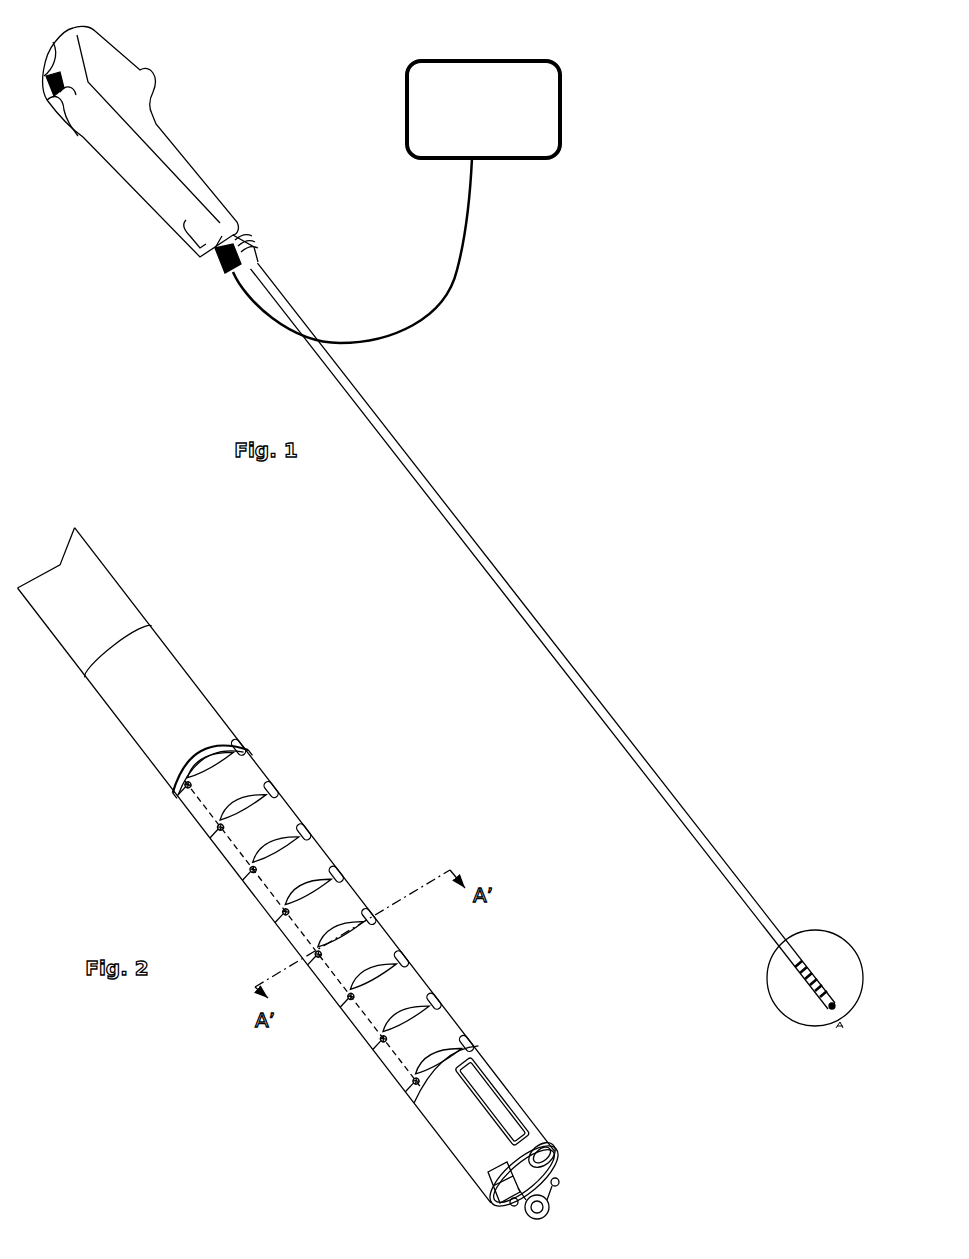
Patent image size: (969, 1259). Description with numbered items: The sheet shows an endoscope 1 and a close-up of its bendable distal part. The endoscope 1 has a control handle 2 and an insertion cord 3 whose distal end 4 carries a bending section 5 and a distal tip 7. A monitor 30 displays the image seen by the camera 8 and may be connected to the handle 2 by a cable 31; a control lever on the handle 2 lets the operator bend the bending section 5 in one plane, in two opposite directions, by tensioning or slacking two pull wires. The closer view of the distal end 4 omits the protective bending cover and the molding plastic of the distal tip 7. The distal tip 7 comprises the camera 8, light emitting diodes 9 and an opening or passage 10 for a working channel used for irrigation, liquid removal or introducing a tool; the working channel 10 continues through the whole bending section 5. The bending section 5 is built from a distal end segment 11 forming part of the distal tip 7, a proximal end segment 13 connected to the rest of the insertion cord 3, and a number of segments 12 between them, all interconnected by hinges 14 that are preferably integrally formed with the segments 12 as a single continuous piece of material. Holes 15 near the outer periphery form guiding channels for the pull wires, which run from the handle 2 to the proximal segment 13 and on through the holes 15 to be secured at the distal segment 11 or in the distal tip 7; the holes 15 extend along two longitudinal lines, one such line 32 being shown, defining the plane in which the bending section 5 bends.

In FIG. 1, the endoscope 1 is at (523, 381).
In FIG. 1, the control handle 2 is at (231, 135).
In FIG. 1, the insertion cord 3 is at (495, 567).
In FIG. 1, the distal end 4 is at (852, 922).
In FIG. 2, the distal end 4 is at (332, 726).
In FIG. 1, the bending section 5 is at (817, 978).
In FIG. 2, the bending section 5 is at (376, 882).
In FIG. 2, the distal tip 7 is at (547, 1086).
In FIG. 2, the camera 8 is at (540, 1208).
In FIG. 2, the light emitting diodes 9 is at (555, 1186).
In FIG. 2, the working channel 10 is at (280, 850).
In FIG. 2, the distal end segment 11 is at (442, 1132).
In FIG. 2, the segments 12 is at (268, 918).
In FIG. 2, the proximal end segment 13 is at (232, 747).
In FIG. 2, the hinges 14 is at (298, 837).
In FIG. 2, the holes 15 is at (322, 955).
In FIG. 1, the monitor 30 is at (560, 133).
In FIG. 1, the cable 31 is at (458, 268).
In FIG. 2, the line 32 is at (267, 908).